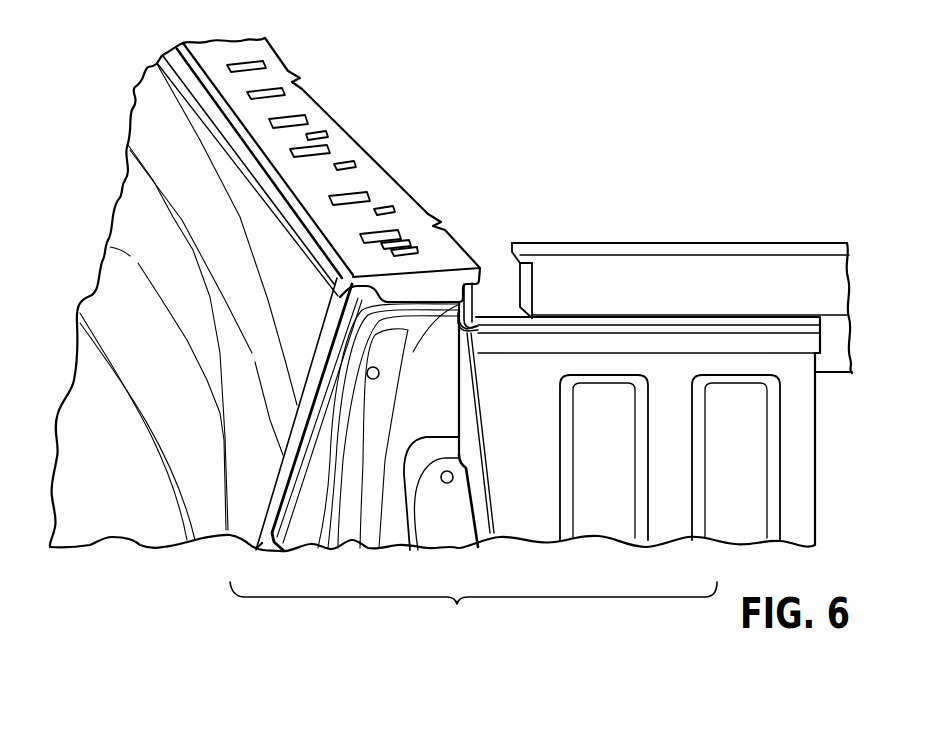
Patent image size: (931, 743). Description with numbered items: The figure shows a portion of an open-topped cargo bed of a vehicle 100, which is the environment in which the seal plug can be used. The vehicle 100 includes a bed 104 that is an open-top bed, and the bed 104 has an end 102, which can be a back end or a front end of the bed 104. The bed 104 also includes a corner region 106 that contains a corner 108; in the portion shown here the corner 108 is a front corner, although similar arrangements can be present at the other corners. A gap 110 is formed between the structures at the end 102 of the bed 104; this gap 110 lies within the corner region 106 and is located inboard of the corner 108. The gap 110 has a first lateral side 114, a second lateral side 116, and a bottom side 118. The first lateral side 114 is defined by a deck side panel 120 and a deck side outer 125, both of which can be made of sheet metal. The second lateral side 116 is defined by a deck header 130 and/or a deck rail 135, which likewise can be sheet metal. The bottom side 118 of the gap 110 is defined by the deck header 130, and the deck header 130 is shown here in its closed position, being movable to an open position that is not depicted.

The vehicle 100 is at (599, 80).
The end 102 is at (578, 600).
The bed 104 is at (624, 175).
The corner region 106 is at (406, 470).
The corner 108 is at (316, 531).
The gap 110 is at (511, 187).
The first lateral side 114 is at (472, 288).
The second lateral side 116 is at (510, 268).
The bottom side 118 is at (497, 318).
The deck side panel 120 is at (386, 522).
The deck side outer 125 is at (377, 170).
The deck header 130 is at (612, 517).
The deck rail 135 is at (653, 243).